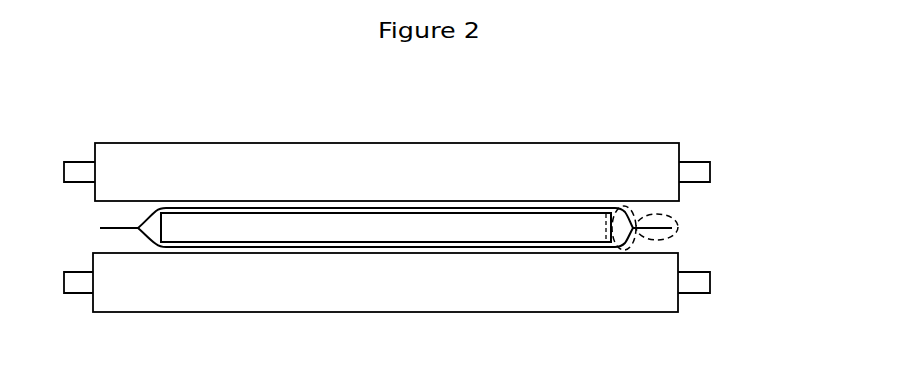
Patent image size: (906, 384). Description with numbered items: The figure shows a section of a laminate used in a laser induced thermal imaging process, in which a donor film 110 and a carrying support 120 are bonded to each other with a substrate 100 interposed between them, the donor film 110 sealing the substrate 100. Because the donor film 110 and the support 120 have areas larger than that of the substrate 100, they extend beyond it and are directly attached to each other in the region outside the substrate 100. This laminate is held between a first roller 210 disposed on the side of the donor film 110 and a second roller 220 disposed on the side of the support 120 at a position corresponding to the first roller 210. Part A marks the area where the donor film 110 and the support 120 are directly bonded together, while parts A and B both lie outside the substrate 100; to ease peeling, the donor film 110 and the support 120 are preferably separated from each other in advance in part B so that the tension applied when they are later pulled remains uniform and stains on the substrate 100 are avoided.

The substrate 100 is at (232, 227).
The donor film 110 is at (465, 208).
The support 120 is at (465, 247).
The first roller 210 is at (317, 157).
The second roller 220 is at (317, 300).
The part A is at (677, 222).
The part B is at (627, 249).